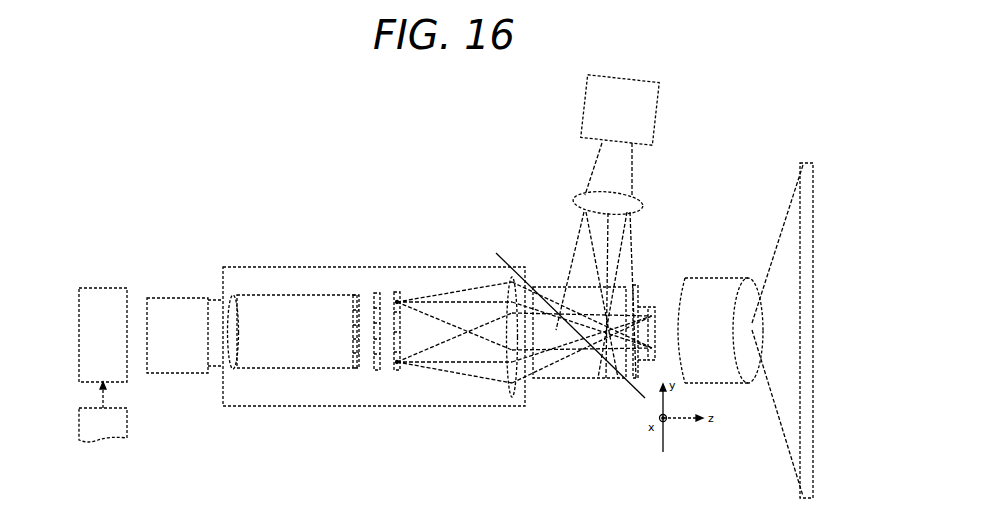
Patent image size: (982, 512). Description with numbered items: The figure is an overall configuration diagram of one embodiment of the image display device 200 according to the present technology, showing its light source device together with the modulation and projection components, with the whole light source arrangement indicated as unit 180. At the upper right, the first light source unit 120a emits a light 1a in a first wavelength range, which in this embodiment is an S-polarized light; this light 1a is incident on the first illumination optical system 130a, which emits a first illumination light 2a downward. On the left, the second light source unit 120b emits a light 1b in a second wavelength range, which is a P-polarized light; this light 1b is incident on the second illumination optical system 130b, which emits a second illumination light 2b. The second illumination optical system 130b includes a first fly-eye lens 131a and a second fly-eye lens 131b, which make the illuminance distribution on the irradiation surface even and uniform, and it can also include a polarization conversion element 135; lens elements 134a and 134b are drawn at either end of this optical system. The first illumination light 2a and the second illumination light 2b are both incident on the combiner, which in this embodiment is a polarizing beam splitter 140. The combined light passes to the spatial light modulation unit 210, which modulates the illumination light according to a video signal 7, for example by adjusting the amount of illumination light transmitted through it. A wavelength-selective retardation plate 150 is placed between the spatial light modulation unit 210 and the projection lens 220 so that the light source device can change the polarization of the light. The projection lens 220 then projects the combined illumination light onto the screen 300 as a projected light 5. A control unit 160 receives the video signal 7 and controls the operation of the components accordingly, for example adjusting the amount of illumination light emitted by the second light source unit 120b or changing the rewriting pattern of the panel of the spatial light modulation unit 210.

The image display device 200 is at (204, 196).
The image display unit 180 is at (226, 238).
The second illumination optical system 130b is at (357, 266).
The control unit 160 is at (127, 296).
The video signal 7 is at (128, 420).
The second light source unit 120b is at (171, 298).
The lens 134a is at (237, 296).
The first fly-eye lens 131a is at (355, 293).
The polarization conversion element 135 is at (378, 371).
The second fly-eye lens 131b is at (385, 294).
The lens 134b is at (509, 382).
The light in second wavelength range 1b is at (232, 385).
The second illumination light 2b is at (287, 385).
The polarizing beam splitter 140 is at (612, 380).
The wavelength-selective retardation plate 150 is at (637, 284).
The spatial light modulation unit 210 is at (652, 306).
The first light source unit 120a is at (654, 125).
The light in first wavelength range 1a is at (647, 168).
The first illumination optical system 130a is at (644, 202).
The first illumination light 2a is at (643, 242).
The projection lens 220 is at (697, 278).
The projected light 5 is at (770, 241).
The screen 300 is at (800, 488).